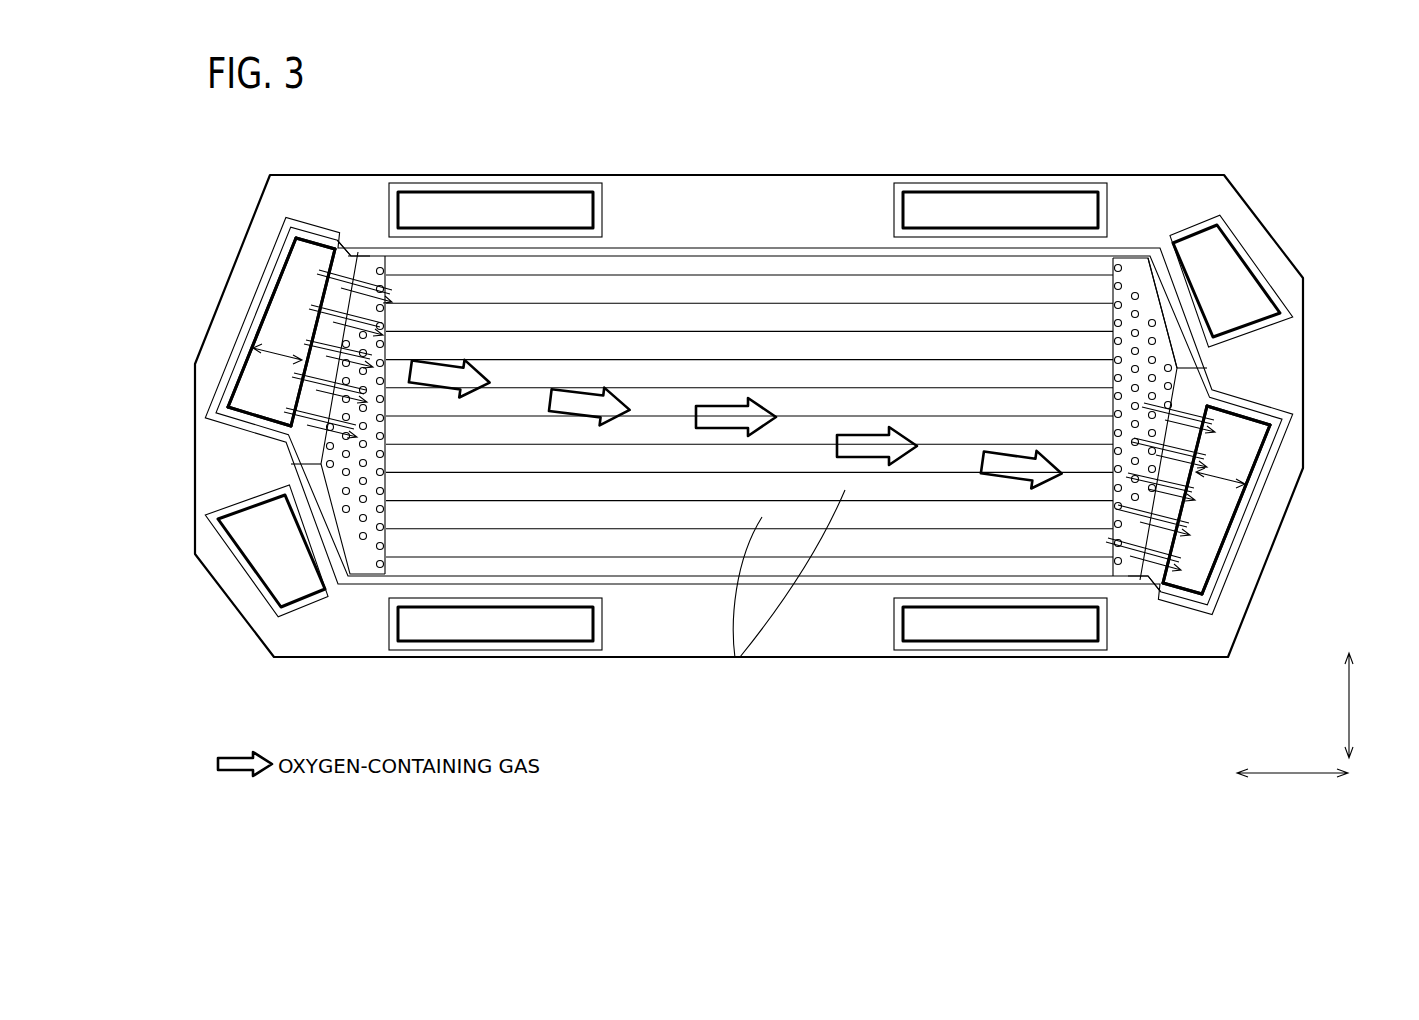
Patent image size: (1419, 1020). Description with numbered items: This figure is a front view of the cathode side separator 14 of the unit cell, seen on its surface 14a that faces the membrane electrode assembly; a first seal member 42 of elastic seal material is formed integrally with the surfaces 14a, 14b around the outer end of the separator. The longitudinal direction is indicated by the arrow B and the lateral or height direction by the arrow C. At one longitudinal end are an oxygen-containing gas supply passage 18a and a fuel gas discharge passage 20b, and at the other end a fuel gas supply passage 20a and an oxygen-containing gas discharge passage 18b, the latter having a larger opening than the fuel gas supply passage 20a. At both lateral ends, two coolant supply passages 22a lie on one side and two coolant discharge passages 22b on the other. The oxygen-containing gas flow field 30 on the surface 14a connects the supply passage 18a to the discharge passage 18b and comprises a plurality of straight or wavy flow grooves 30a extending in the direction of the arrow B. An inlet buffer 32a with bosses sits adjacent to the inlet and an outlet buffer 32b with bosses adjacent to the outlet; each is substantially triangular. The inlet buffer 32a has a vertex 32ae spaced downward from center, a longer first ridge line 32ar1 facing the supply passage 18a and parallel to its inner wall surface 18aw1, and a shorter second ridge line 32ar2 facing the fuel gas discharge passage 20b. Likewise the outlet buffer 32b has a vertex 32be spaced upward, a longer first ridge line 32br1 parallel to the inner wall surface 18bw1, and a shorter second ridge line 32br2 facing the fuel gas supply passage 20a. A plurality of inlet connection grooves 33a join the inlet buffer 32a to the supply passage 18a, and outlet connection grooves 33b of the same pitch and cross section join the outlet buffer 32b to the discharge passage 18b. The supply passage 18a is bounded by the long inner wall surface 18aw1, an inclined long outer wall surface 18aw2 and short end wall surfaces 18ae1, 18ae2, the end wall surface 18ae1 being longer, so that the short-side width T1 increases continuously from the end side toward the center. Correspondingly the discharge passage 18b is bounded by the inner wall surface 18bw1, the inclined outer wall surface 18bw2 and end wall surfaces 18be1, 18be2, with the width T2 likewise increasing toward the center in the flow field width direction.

The cathode side separator 14 is at (416, 109).
The surface 14a is at (810, 630).
The surface 14b is at (857, 642).
The oxygen-containing gas supply passage 18a is at (270, 300).
The end wall surface 18ae1 is at (230, 410).
The end wall surface 18ae2 is at (287, 262).
The inner wall surface 18aw1 is at (304, 372).
The outer wall surface 18aw2 is at (266, 318).
The oxygen-containing gas discharge passage 18b is at (1210, 538).
The end wall surface 18be1 is at (1252, 430).
The end wall surface 18be2 is at (1210, 602).
The inner wall surface 18bw1 is at (1200, 440).
The outer wall surface 18bw2 is at (1238, 520).
The fuel gas supply passage 20a is at (1243, 287).
The fuel gas discharge passage 20b is at (242, 540).
The coolant supply passage 22a is at (485, 203).
The coolant discharge passage 22b is at (947, 203).
The oxygen-containing gas flow field 30 is at (672, 518).
The flow grooves 30a is at (735, 658).
The inlet buffer 32a is at (362, 532).
The vertex 32ae is at (322, 463).
The first ridge line 32ar1 is at (350, 250).
The second ridge line 32ar2 is at (300, 580).
The outlet buffer 32b is at (1155, 352).
The vertex 32be is at (1177, 370).
The first ridge line 32br1 is at (1172, 592).
The second ridge line 32br2 is at (1147, 297).
The inlet connection grooves 33a is at (337, 402).
The outlet connection grooves 33b is at (1140, 402).
The first seal member 42 is at (734, 248).
The width of the opening on the short side T1 is at (277, 347).
The width of the opening on the short side T2 is at (1220, 473).
The arrow B is at (1292, 785).
The arrow C is at (1357, 705).